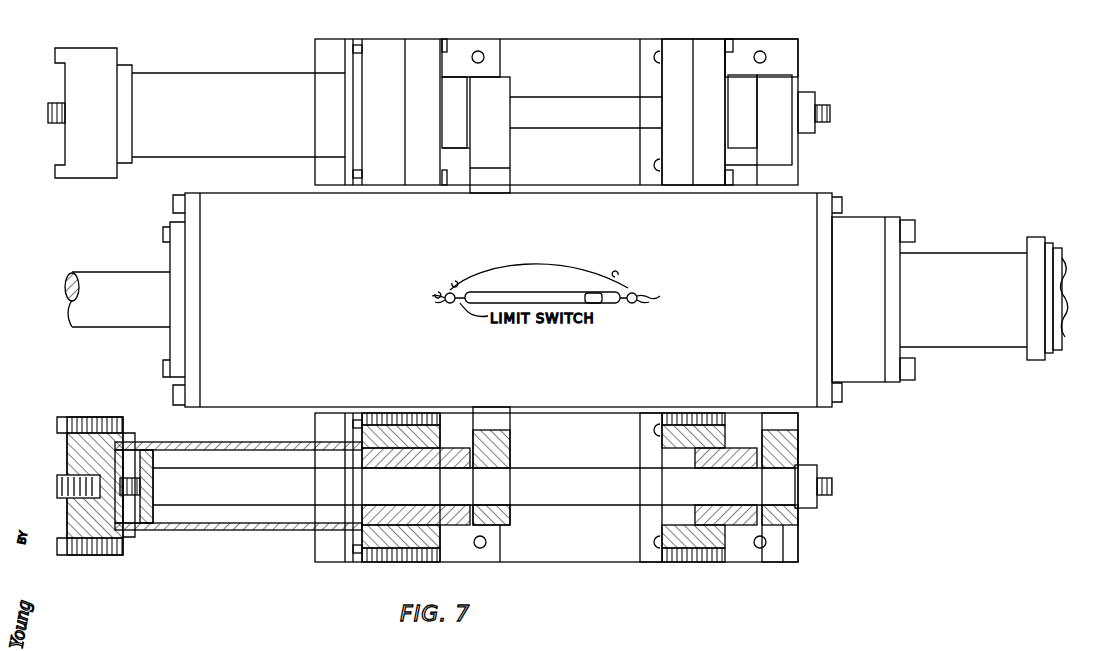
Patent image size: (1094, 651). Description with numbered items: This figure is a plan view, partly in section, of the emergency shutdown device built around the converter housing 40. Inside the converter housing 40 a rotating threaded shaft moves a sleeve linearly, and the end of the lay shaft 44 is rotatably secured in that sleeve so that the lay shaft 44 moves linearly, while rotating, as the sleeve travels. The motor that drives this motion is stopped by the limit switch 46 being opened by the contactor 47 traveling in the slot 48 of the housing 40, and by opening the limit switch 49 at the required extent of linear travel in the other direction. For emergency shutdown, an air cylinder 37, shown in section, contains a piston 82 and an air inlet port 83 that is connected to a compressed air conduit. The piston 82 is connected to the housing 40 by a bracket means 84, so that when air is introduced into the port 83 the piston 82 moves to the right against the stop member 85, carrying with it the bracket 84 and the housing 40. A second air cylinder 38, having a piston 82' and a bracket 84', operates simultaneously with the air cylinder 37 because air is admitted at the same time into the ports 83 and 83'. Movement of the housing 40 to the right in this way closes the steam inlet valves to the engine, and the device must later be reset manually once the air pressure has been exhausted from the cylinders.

The air cylinder 37 is at (230, 458).
The air cylinder 38 is at (260, 71).
The converter housing 40 is at (322, 327).
The lay shaft 44 is at (72, 322).
The limit switch 46 is at (637, 303).
The contactor 47 is at (590, 293).
The slot 48 is at (532, 298).
The limit switch 49 is at (447, 303).
The piston 82 is at (474, 479).
The piston 82' is at (586, 98).
The air inlet port 83 is at (81, 486).
The air inlet port 83' is at (74, 113).
The bracket means 84 is at (510, 466).
The bracket 84' is at (513, 135).
The stop member 85 is at (642, 78).